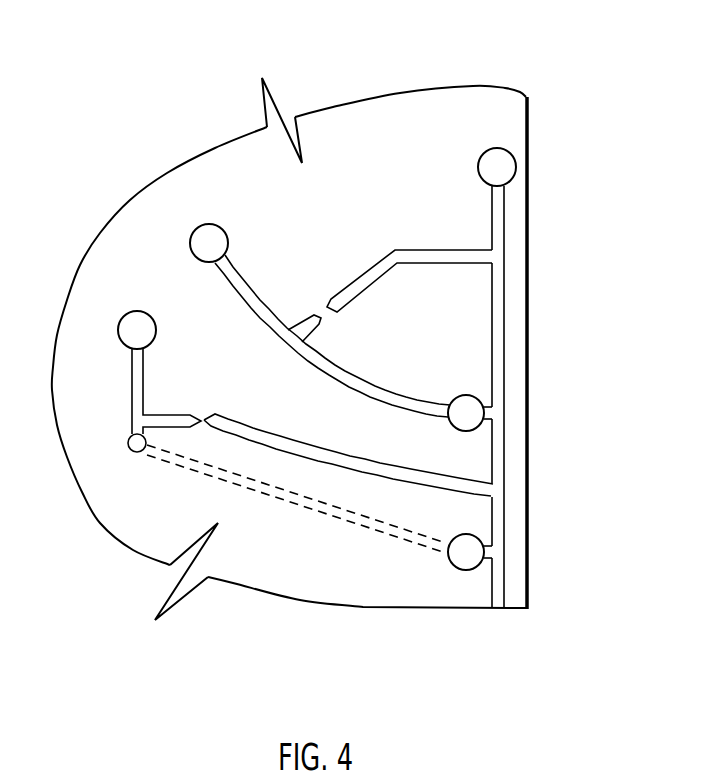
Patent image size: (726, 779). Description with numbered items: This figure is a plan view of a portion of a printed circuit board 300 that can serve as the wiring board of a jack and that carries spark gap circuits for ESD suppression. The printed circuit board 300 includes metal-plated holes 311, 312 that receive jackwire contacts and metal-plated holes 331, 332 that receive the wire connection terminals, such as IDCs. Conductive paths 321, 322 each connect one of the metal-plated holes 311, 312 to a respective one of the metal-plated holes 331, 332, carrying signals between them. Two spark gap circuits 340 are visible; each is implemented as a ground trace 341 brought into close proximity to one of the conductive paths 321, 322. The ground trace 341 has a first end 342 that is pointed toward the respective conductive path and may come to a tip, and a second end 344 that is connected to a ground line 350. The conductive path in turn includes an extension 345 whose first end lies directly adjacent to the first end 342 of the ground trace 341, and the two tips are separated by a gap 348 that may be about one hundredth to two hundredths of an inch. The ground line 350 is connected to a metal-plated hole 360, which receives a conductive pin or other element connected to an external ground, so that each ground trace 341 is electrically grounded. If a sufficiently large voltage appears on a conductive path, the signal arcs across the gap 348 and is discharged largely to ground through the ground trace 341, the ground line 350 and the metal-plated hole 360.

The printed circuit board 300 is at (198, 86).
The metal-plated hole 311 is at (190, 243).
The metal-plated hole 312 is at (121, 340).
The conductive path 321 is at (388, 405).
The conductive path 322 is at (418, 548).
The metal-plated hole 331 is at (486, 417).
The metal-plated hole 332 is at (486, 553).
The spark gap circuit 340 is at (296, 252).
The ground trace 341 is at (360, 287).
The first end 342 is at (325, 285).
The second end 344 is at (463, 240).
The extension 345 is at (299, 332).
The gap 348 is at (330, 327).
The ground line 350 is at (504, 287).
The metal-plated hole 360 is at (512, 176).